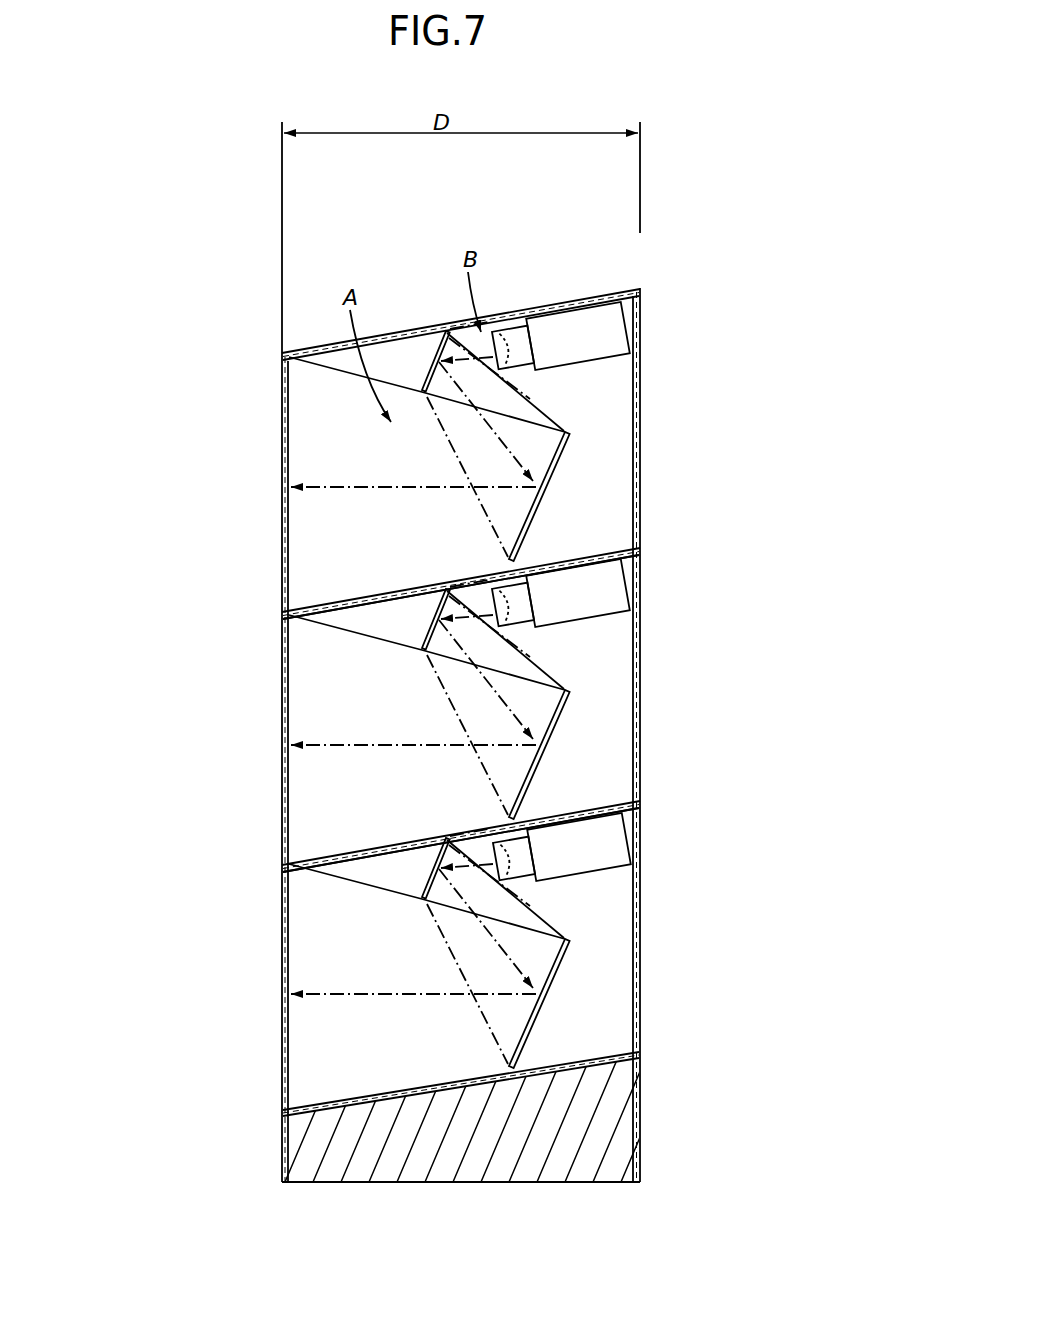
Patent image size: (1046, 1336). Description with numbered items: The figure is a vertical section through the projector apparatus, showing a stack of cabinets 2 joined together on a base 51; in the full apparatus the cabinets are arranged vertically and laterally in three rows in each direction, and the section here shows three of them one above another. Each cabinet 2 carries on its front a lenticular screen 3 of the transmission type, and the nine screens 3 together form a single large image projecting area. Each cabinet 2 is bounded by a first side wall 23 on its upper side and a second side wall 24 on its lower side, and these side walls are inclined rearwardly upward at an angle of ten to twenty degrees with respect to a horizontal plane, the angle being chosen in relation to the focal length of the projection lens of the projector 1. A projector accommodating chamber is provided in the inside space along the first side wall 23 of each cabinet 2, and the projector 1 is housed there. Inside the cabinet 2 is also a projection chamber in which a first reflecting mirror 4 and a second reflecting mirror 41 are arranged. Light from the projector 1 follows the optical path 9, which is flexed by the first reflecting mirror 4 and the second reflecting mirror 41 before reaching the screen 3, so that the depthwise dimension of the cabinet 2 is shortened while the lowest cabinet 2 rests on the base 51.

The projector 1 is at (588, 347).
The cabinet 2 is at (642, 440).
The lenticular screen 3 is at (282, 425).
The first reflecting mirror 4 is at (437, 358).
The optical path 9 is at (534, 400).
The first side wall 23 is at (587, 295).
The second side wall 24 is at (596, 566).
The second reflecting mirror 41 is at (564, 470).
The base 51 is at (617, 1150).